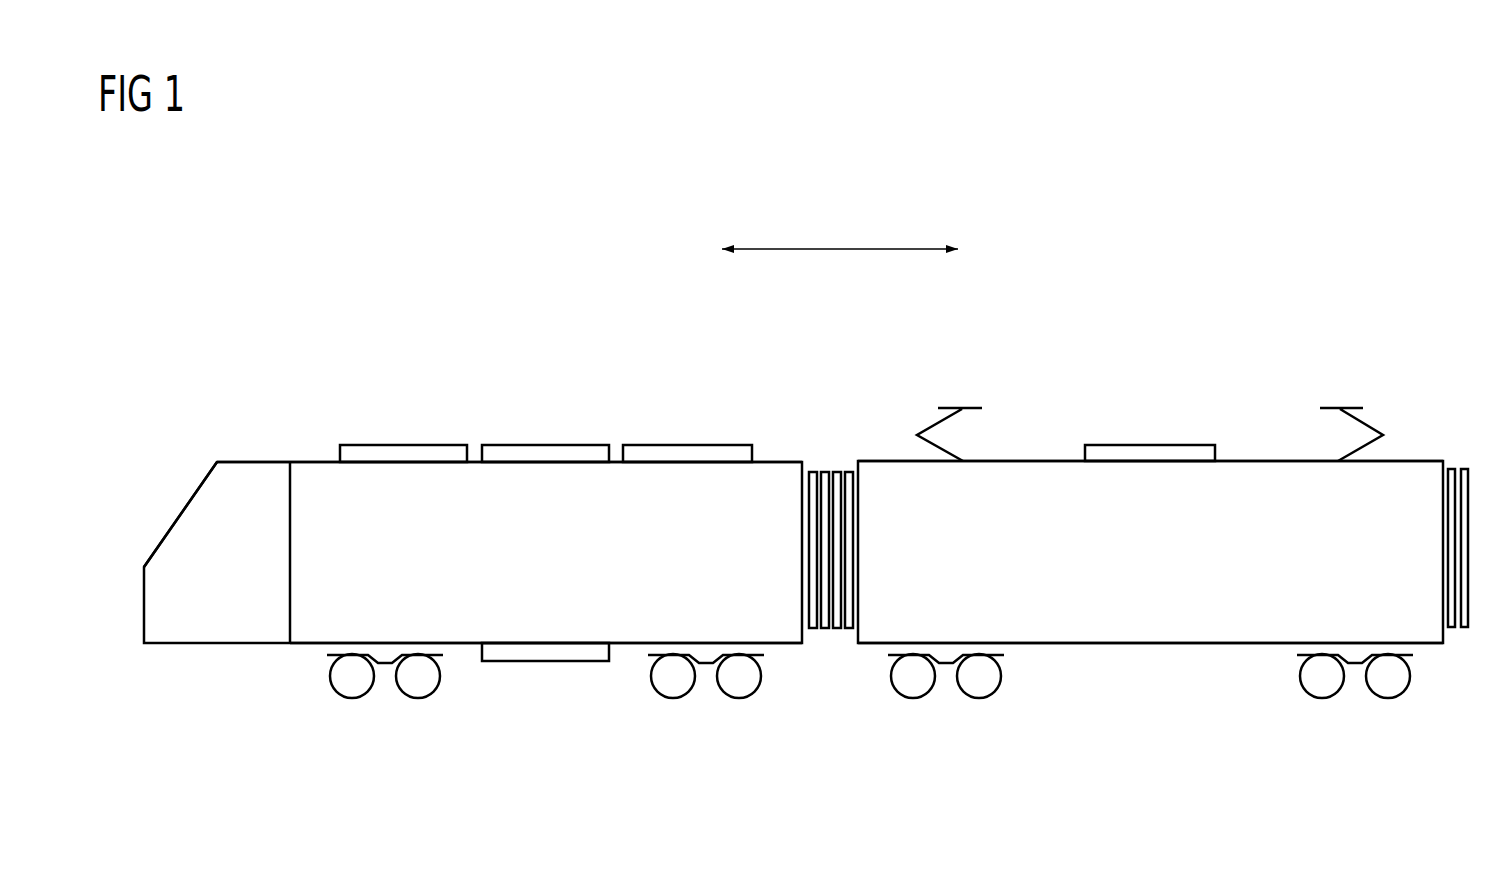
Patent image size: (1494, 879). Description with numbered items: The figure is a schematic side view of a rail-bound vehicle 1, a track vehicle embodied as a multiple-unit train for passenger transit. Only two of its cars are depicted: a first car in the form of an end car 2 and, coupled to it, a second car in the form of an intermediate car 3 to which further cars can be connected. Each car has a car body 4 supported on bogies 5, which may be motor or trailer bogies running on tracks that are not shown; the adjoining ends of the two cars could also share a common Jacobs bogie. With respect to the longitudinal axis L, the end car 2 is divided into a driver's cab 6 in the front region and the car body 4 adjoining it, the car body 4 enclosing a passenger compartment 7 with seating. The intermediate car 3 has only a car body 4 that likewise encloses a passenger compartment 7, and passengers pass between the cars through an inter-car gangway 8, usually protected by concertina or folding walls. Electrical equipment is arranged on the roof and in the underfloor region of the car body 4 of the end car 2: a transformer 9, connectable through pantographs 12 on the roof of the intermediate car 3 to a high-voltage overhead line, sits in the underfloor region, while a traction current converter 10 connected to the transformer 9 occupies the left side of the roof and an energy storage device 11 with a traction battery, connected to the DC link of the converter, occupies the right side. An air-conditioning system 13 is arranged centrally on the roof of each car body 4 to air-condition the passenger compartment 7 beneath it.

The rail-bound vehicle 1 is at (342, 382).
The end car 2 is at (210, 440).
The intermediate car 3 is at (855, 428).
The car body 4 is at (292, 462).
The bogie 5 is at (388, 688).
The driver's cab 6 is at (173, 520).
The passenger compartment 7 is at (467, 627).
The inter-car gangway 8 is at (827, 640).
The transformer 9 is at (548, 662).
The traction current converter 10 is at (420, 444).
The energy storage device 11 is at (690, 444).
The pantograph 12 is at (928, 430).
The air-conditioning system 13 is at (553, 444).
The longitudinal axis L is at (842, 249).